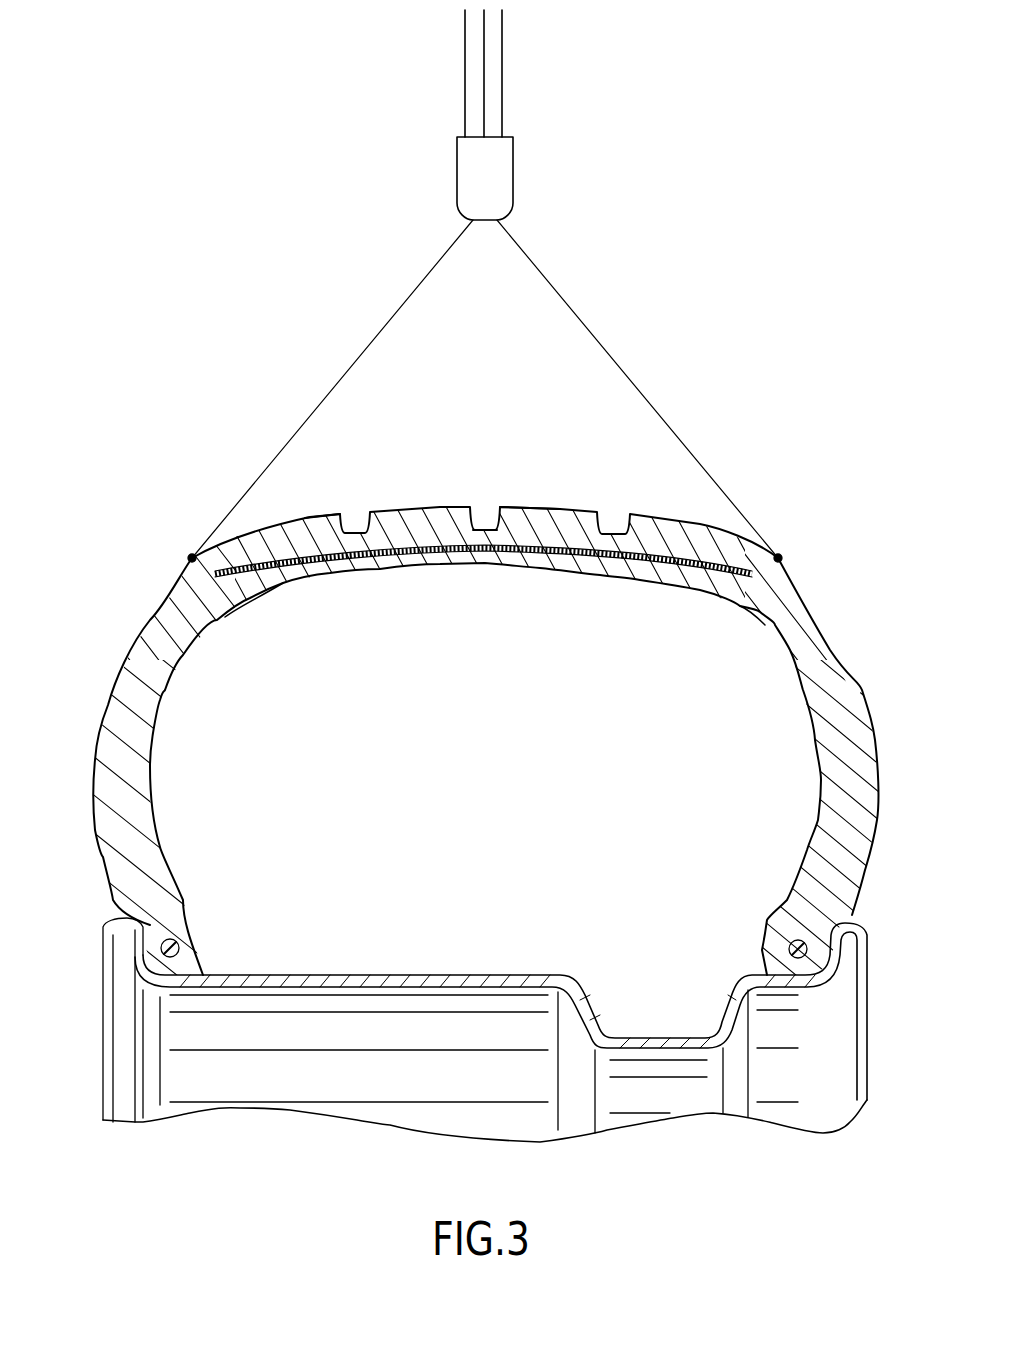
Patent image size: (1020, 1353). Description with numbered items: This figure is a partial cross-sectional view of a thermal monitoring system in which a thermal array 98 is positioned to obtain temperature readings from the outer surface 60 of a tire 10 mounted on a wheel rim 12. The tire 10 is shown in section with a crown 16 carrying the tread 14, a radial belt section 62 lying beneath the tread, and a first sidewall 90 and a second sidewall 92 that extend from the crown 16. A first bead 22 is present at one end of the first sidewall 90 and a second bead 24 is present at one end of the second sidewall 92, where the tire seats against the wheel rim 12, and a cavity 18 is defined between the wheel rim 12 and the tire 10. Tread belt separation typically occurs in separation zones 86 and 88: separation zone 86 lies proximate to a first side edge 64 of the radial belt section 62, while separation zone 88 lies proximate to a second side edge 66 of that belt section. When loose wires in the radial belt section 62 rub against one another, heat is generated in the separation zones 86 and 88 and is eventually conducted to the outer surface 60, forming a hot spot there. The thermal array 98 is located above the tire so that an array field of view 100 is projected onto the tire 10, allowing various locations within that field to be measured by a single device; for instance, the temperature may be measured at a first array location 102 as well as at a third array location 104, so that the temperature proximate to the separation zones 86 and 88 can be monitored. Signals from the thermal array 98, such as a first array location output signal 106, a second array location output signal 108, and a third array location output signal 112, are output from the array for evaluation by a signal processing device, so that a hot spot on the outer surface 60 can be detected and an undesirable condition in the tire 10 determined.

The tire 10 is at (700, 523).
The wheel rim 12 is at (430, 975).
The tread 14 is at (470, 520).
The crown 16 is at (558, 510).
The cavity 18 is at (497, 791).
The first bead 22 is at (790, 918).
The second bead 24 is at (165, 918).
The outer surface 60 is at (310, 520).
The radial belt section 62 is at (380, 570).
The first side edge 64 is at (760, 590).
The second side edge 66 is at (208, 588).
The separation zone 86 is at (788, 565).
The separation zone 88 is at (186, 559).
The first sidewall 90 is at (880, 740).
The second sidewall 92 is at (93, 768).
The thermal array 98 is at (468, 170).
The array field of view 100 is at (622, 373).
The first array location 102 is at (800, 538).
The third array location 104 is at (448, 482).
The first array location output signal 106 is at (465, 65).
The second array location output signal 108 is at (485, 48).
The third array location output signal 112 is at (505, 105).